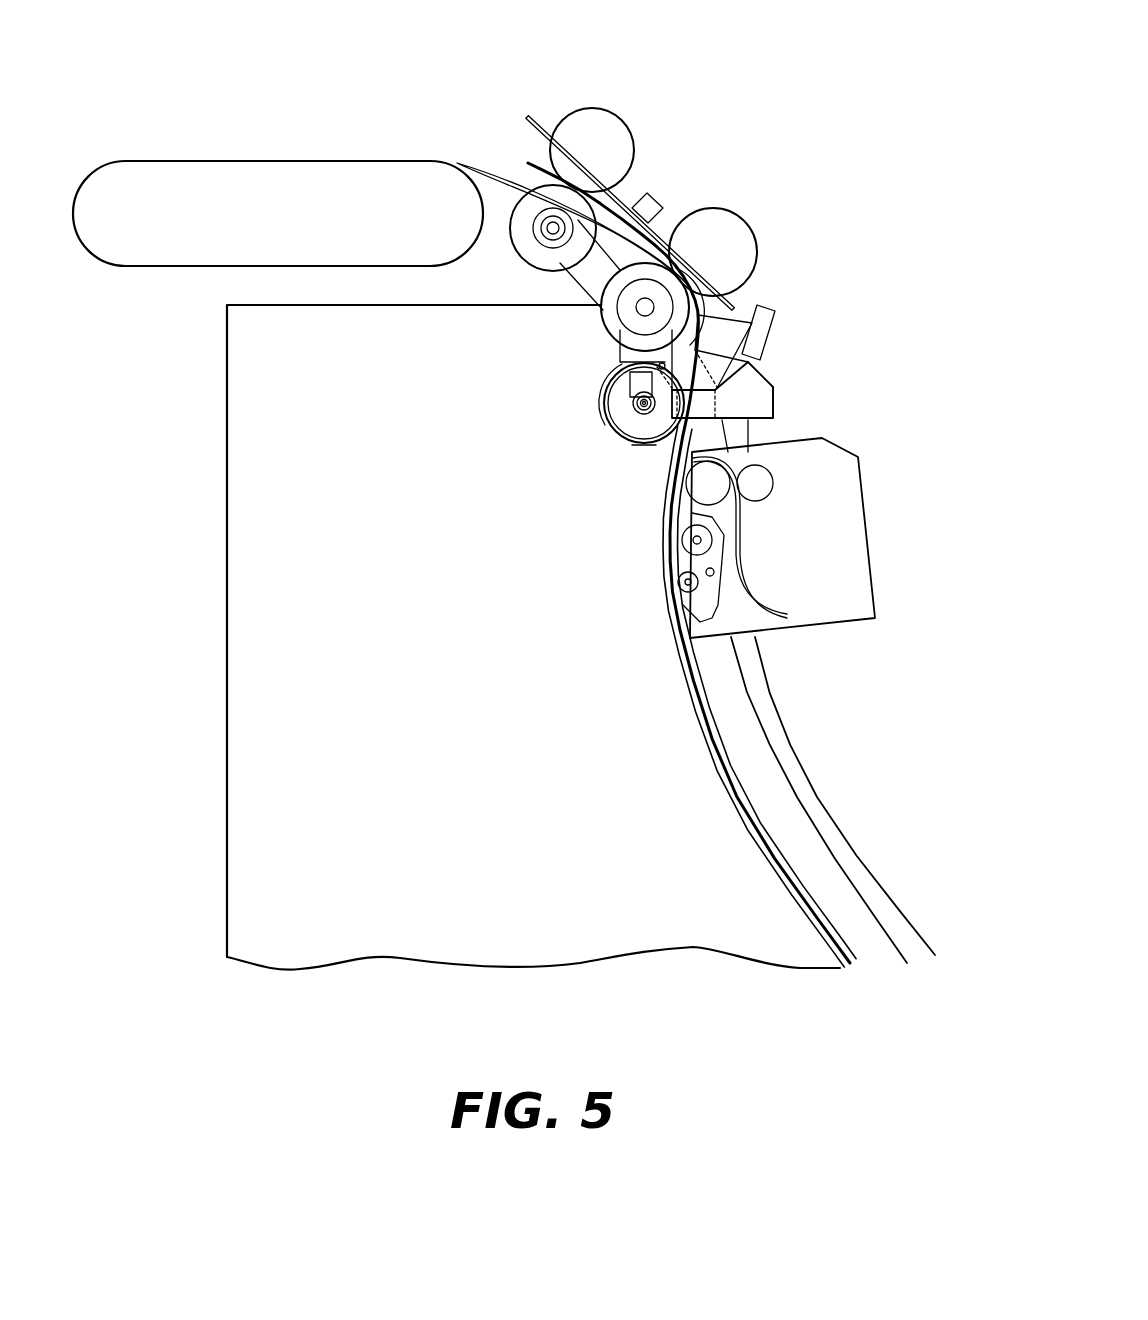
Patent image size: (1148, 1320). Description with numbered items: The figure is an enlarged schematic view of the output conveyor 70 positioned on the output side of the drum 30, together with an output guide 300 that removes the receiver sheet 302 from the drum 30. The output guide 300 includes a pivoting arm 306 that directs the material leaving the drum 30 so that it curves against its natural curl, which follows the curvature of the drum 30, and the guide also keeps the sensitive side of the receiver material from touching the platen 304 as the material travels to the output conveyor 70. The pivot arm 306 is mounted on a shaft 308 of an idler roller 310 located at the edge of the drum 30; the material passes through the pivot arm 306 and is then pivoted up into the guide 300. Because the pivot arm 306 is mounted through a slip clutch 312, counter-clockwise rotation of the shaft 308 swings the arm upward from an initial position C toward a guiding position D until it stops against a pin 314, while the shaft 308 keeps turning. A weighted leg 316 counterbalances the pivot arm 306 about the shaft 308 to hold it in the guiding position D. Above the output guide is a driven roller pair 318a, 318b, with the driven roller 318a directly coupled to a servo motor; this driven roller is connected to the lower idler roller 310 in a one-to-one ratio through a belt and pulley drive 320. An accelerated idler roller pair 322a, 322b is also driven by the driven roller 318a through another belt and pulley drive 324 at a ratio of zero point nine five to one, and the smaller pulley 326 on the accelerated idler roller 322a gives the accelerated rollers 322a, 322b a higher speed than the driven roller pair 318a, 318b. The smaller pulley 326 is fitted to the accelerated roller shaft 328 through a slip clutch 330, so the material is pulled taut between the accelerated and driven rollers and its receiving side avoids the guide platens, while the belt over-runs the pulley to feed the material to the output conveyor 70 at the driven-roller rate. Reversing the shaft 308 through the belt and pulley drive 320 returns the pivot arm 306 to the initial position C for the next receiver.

The output conveyor 70 is at (180, 134).
The drum 30 is at (710, 753).
The output guide 300 is at (818, 95).
The receiver sheet 302 is at (640, 193).
The platen 304 is at (533, 122).
The pivoting arm 306 is at (763, 400).
The shaft 308 is at (637, 416).
The idler roller 310 is at (645, 440).
The slip clutch 312 is at (622, 411).
The pin 314 is at (630, 387).
The weighted leg 316 is at (640, 404).
The driven roller 318a is at (603, 312).
The driven roller 318b is at (735, 233).
The belt and pulley drive 320 is at (610, 370).
The accelerated idler roller 322a is at (522, 234).
The accelerated idler roller 322b is at (607, 123).
The belt and pulley drive 324 is at (575, 288).
The smaller pulley 326 is at (541, 223).
The accelerated roller shaft 328 is at (549, 224).
The slip clutch 330 is at (548, 226).
The guiding position D is at (733, 333).
The initial position C is at (776, 385).